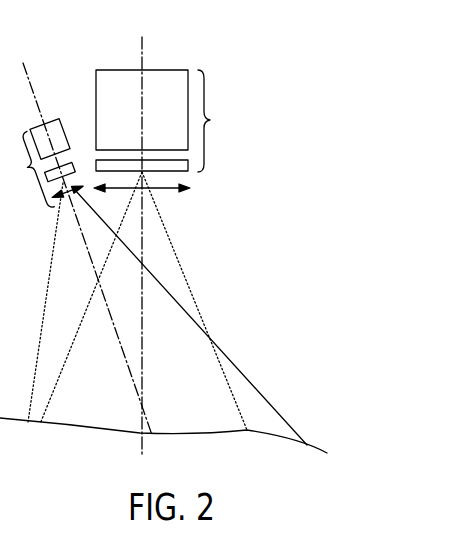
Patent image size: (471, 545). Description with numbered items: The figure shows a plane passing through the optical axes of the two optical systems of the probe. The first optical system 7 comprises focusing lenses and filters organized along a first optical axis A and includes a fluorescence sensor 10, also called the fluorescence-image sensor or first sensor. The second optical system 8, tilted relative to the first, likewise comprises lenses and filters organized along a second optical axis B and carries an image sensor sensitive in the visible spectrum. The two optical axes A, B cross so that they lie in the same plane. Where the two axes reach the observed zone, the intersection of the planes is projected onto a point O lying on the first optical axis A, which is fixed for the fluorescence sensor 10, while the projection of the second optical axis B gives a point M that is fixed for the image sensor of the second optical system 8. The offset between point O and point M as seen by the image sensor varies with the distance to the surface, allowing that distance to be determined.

The first optical system 7 is at (159, 106).
The second optical system 8 is at (50, 134).
The fluorescence sensor 10 is at (162, 88).
The first optical axis A is at (142, 237).
The second optical axis B is at (85, 239).
The point M is at (153, 433).
The point O is at (142, 433).